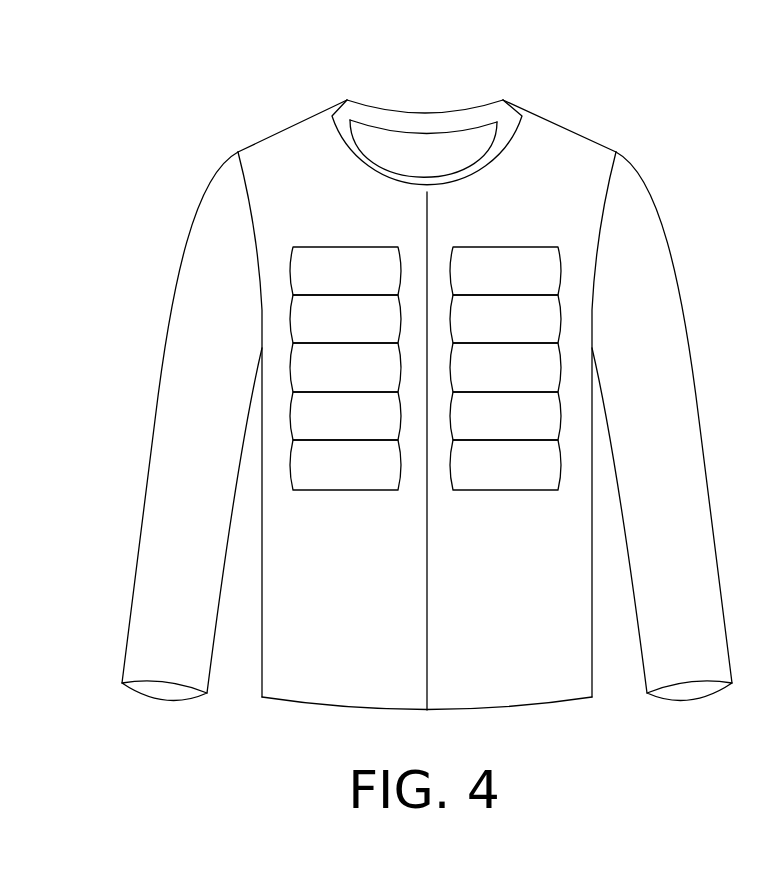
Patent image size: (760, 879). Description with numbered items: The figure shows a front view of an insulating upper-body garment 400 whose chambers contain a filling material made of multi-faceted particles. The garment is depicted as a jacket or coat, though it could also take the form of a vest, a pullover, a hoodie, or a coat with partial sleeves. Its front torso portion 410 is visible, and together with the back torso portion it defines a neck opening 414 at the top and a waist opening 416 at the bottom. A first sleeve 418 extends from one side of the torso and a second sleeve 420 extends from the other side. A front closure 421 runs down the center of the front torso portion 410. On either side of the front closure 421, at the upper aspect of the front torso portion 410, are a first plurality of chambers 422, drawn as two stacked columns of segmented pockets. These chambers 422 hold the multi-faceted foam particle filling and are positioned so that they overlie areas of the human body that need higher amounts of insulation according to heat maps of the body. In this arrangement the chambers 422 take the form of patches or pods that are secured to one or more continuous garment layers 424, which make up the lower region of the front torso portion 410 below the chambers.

The upper-body garment 400 is at (425, 405).
The front torso portion 410 is at (561, 177).
The neck opening 414 is at (420, 88).
The waist opening 416 is at (303, 722).
The first sleeve 418 is at (170, 417).
The second sleeve 420 is at (682, 417).
The front closure 421 is at (428, 655).
The first plurality of chambers 422 is at (305, 417).
The garment layers 424 is at (326, 587).